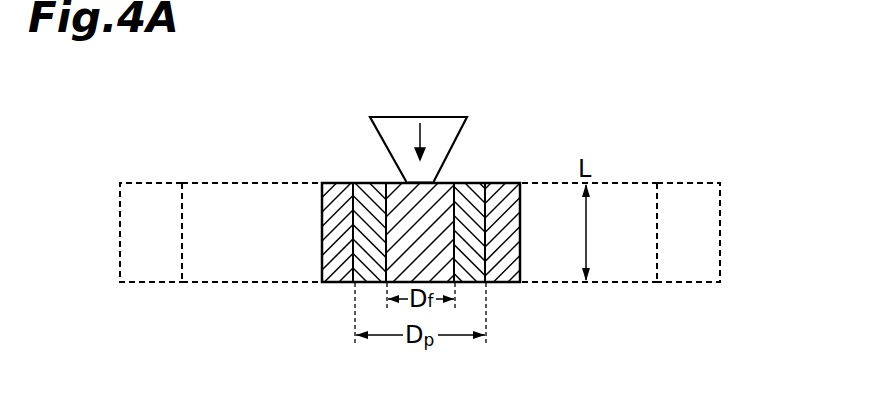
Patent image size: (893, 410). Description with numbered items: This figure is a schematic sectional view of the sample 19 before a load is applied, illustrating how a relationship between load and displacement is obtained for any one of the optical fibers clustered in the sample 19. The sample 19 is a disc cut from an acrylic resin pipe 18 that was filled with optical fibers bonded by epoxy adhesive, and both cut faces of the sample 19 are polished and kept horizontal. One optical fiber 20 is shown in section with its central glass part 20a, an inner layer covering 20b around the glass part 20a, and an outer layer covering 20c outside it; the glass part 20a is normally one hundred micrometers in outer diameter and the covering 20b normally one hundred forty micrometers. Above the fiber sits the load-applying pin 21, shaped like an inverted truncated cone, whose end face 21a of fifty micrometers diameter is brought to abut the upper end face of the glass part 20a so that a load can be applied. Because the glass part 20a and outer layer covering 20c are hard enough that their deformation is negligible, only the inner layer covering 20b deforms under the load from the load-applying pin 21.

The pipe 18 is at (130, 240).
The sample 19 is at (637, 283).
The optical fiber 20 is at (491, 174).
The glass part 20a is at (445, 183).
The inner layer covering 20b is at (470, 183).
The outer layer covering 20c is at (503, 183).
The load-applying pin 21 is at (393, 120).
The end face 21a is at (420, 183).